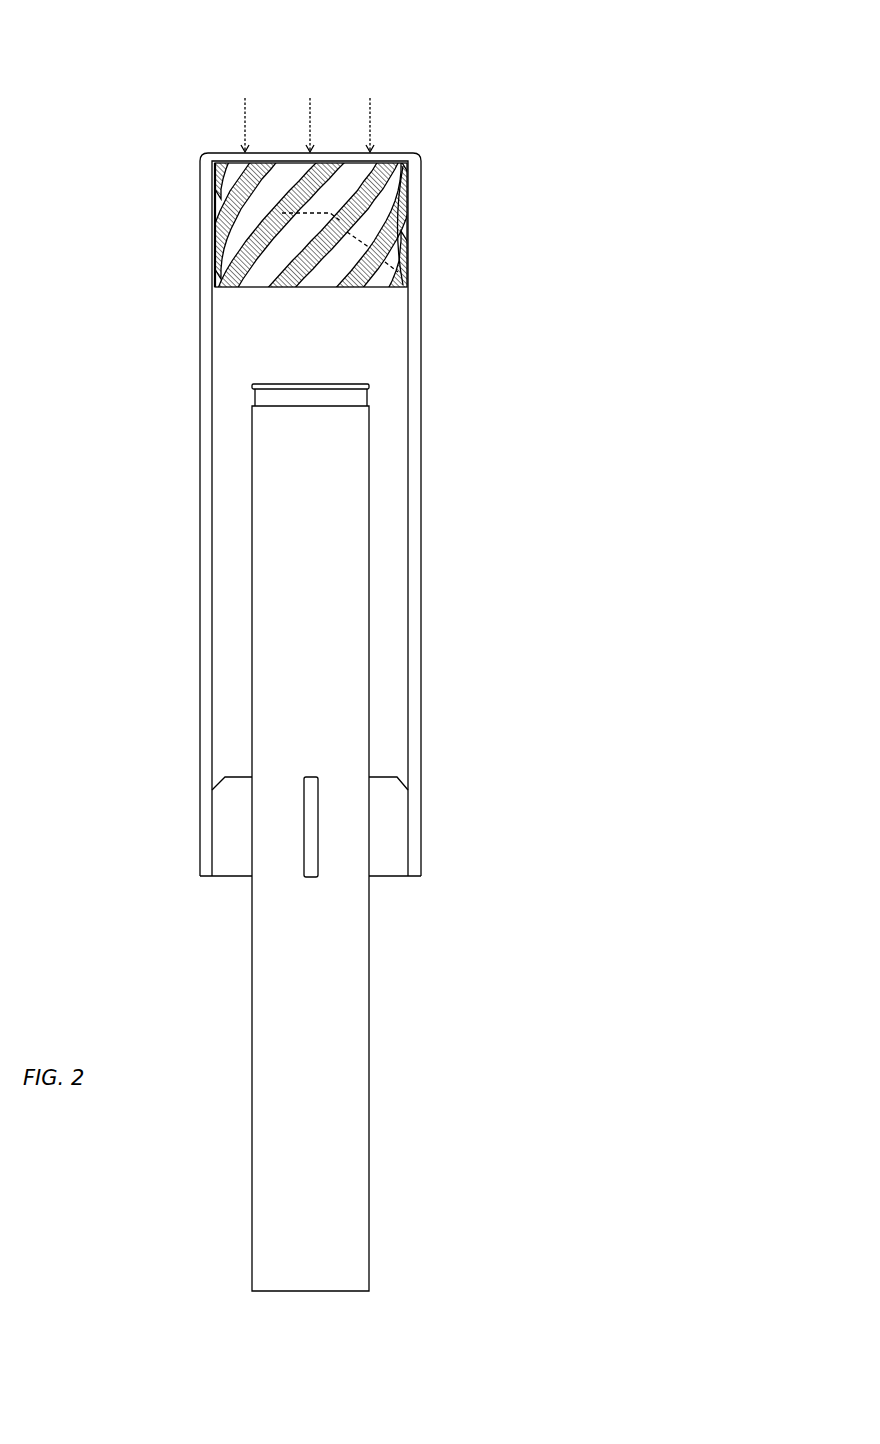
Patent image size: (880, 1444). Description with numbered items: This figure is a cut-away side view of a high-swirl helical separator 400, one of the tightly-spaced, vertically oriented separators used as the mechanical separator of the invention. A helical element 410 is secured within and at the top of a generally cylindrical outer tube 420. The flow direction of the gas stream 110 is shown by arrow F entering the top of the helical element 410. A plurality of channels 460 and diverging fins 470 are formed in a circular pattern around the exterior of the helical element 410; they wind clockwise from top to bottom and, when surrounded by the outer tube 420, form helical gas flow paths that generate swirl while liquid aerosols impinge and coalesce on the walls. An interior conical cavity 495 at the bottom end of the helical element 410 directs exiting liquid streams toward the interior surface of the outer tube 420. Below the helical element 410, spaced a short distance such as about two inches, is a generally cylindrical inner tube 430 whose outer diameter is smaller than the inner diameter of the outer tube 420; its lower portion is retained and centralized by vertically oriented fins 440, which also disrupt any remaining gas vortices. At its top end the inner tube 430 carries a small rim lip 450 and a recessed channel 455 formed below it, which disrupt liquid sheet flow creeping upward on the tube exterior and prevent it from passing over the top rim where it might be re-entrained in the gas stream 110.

The gas stream 110 is at (307, 87).
The helical separator 400 is at (466, 741).
The helical element 410 is at (314, 257).
The outer tube 420 is at (422, 635).
The inner tube 430 is at (370, 1086).
The fins 440 is at (382, 862).
The rim lip 450 is at (375, 387).
The recessed channel 455 is at (372, 398).
The channels 460 is at (375, 228).
The diverging fins 470 is at (387, 200).
The conical cavity 495 is at (252, 280).